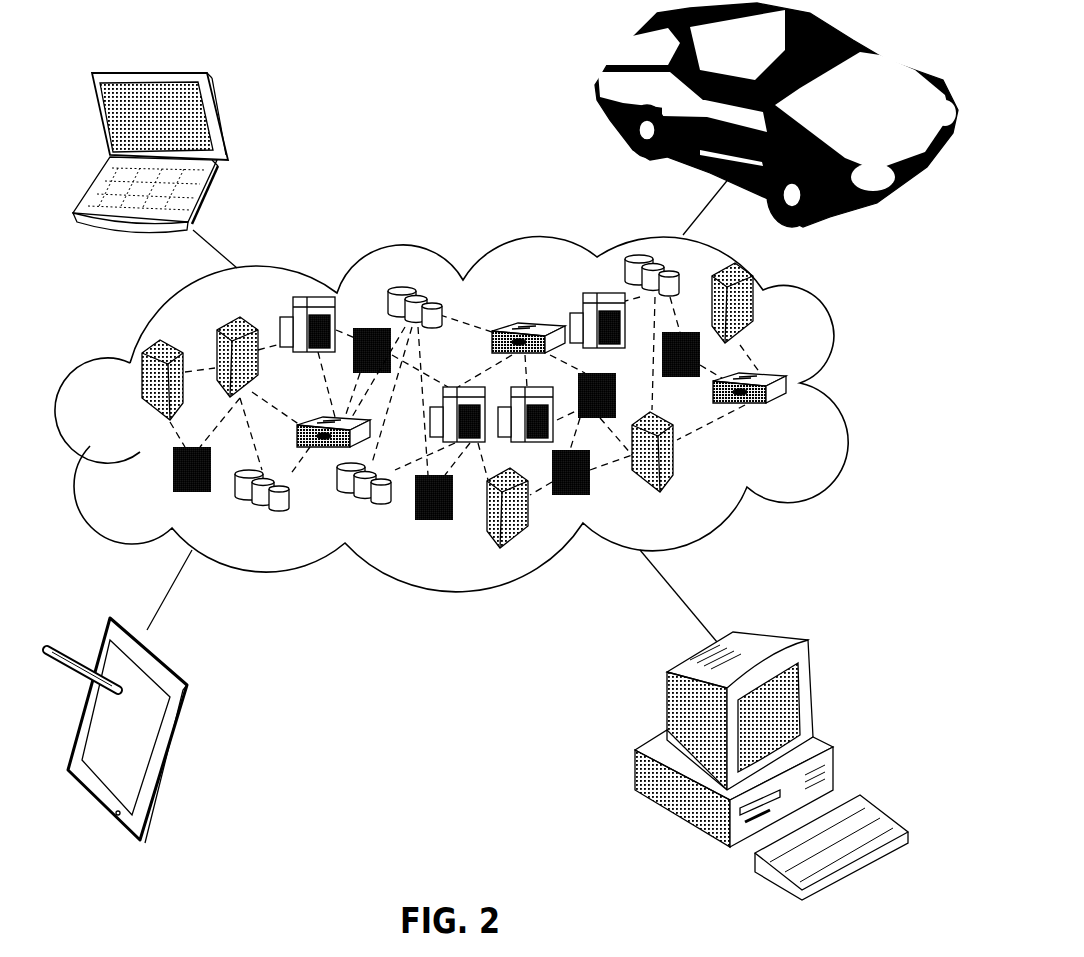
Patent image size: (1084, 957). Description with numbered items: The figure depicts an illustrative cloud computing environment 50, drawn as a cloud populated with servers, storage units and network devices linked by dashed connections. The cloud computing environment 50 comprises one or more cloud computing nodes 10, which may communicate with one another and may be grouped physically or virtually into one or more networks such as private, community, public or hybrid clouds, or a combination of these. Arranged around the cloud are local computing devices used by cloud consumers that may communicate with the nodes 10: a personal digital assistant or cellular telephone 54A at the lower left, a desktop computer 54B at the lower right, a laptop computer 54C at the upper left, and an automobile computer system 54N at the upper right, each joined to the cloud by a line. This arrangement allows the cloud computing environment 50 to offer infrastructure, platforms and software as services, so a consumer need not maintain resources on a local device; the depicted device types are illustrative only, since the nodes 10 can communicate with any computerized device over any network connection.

The cloud computing node 10 is at (805, 425).
The cloud computing environment 50 is at (847, 390).
The personal digital assistant (PDA) or cellular telephone 54A is at (183, 718).
The desktop computer 54B is at (777, 630).
The laptop computer 54C is at (218, 120).
The automobile computer system 54N is at (598, 90).